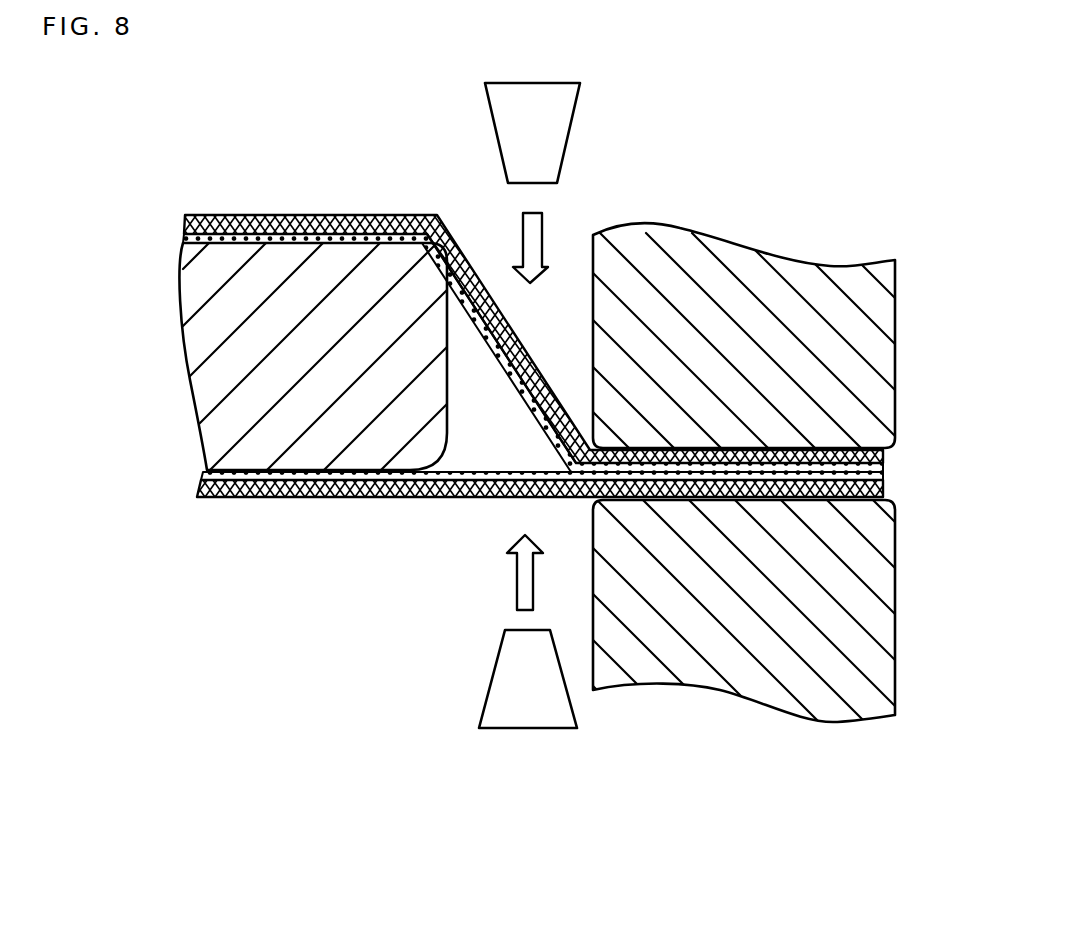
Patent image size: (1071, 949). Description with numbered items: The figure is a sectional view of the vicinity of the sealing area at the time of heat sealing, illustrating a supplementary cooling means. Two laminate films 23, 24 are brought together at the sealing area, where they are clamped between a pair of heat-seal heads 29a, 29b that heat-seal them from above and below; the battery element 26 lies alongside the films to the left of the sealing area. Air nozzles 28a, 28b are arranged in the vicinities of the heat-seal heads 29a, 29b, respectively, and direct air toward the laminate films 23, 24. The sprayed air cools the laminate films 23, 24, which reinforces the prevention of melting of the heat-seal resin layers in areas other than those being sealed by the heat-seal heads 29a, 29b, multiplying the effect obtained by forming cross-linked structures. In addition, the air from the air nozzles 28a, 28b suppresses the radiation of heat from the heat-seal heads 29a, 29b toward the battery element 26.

The laminate film 23 is at (328, 218).
The laminate film 24 is at (352, 500).
The battery element 26 is at (257, 370).
The air nozzle 28a is at (558, 137).
The air nozzle 28b is at (502, 697).
The heat-seal head 29a is at (728, 283).
The heat-seal head 29b is at (710, 677).